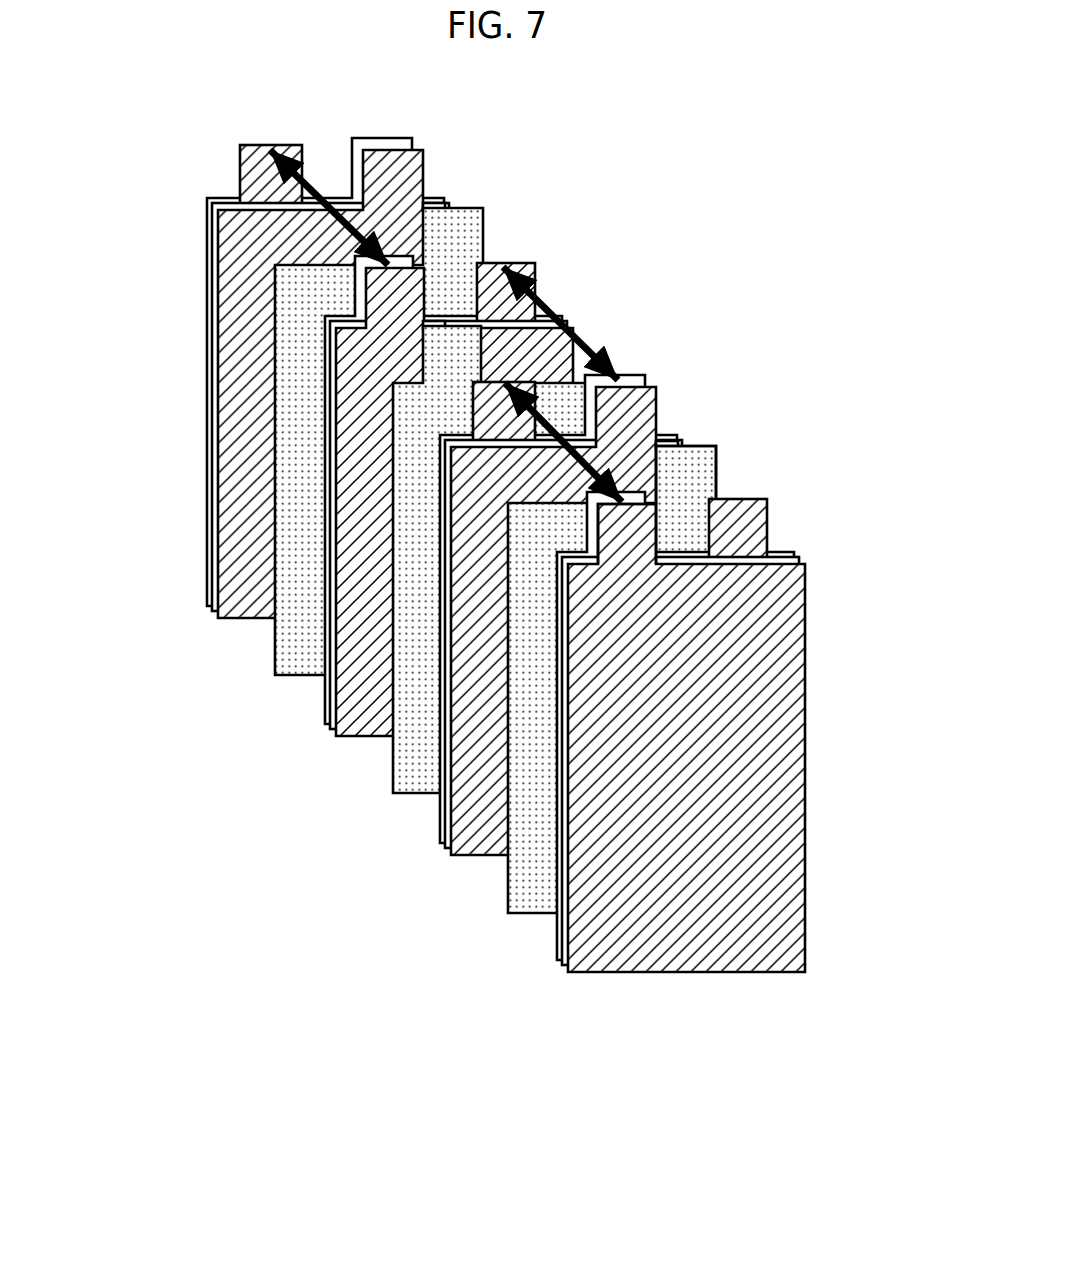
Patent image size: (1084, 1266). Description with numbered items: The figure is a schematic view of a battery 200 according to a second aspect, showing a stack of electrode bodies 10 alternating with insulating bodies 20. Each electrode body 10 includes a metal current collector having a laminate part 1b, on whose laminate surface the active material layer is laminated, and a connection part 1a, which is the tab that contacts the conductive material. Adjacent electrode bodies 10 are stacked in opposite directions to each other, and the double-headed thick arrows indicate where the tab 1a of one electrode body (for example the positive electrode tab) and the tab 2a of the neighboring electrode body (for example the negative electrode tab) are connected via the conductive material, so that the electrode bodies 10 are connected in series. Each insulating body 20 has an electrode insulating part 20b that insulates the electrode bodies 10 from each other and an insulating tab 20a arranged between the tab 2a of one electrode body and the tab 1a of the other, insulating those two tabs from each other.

The battery 200 is at (607, 99).
The electrode body 10 is at (504, 634).
The insulating body 20 is at (484, 639).
The connection part 1a is at (399, 172).
The laminate part 1b is at (698, 759).
The connection part 2a is at (238, 175).
The insulating tab 20a is at (452, 236).
The electrode insulating part 20b is at (300, 405).